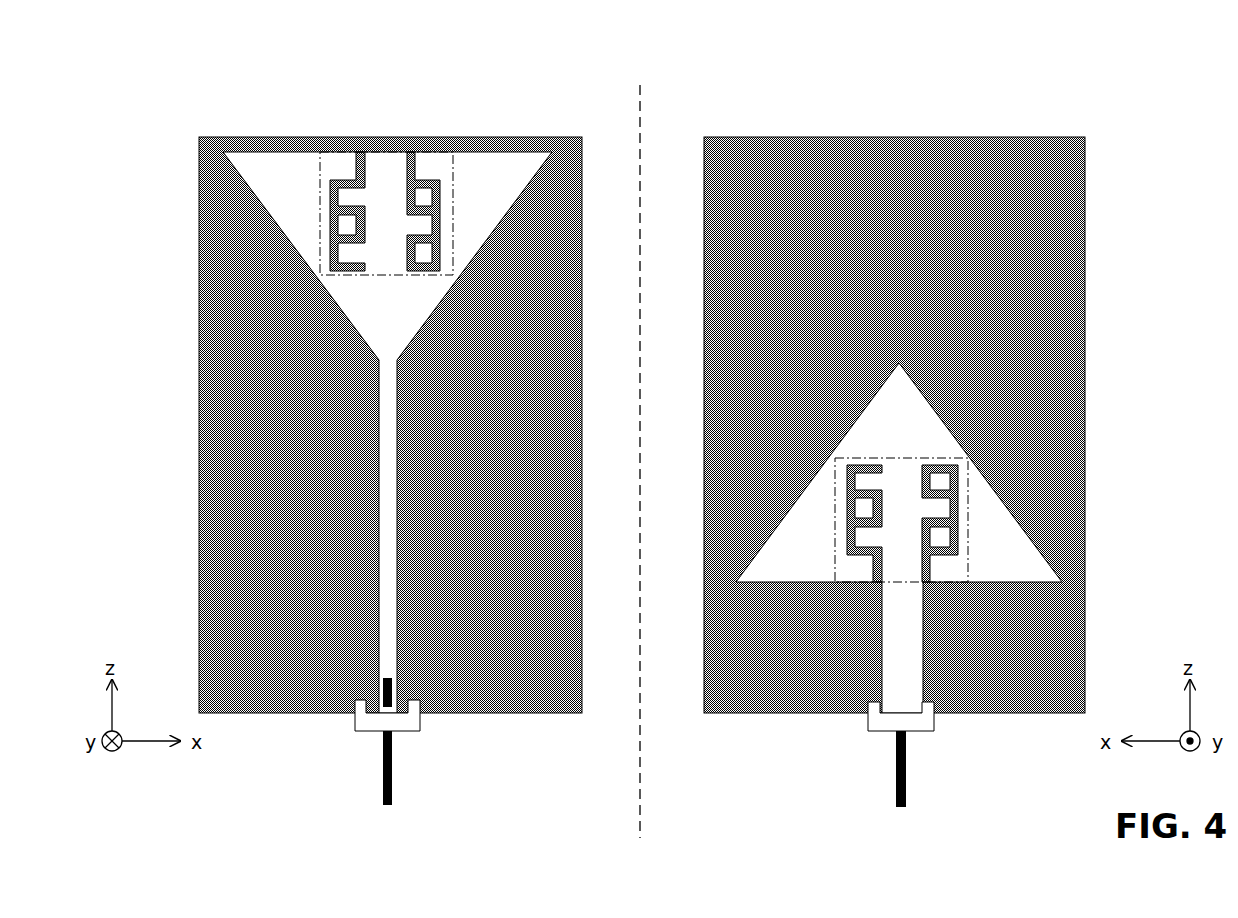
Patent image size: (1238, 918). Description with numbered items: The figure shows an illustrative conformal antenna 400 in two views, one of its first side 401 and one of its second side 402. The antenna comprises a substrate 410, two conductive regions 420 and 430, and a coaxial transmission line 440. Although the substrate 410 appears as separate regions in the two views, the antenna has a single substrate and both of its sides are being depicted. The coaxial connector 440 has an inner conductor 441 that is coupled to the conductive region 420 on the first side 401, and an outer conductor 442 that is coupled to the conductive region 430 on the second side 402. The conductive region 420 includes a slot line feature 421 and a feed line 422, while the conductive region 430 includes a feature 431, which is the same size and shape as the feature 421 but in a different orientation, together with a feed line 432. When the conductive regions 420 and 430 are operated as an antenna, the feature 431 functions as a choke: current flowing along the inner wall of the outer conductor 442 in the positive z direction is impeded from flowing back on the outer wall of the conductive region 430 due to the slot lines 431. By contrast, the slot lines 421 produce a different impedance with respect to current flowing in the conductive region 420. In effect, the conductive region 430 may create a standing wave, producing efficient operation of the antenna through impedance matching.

The conformal antenna 400 is at (629, 417).
The first side 401 is at (404, 70).
The second side 402 is at (914, 70).
The substrate 410 is at (235, 332).
The conductive region 420 is at (497, 183).
The slot line feature 421 is at (325, 160).
The feed line 422 is at (398, 480).
The conductive region 430 is at (1037, 570).
The feature 431 is at (968, 525).
The feed line 432 is at (917, 657).
The coaxial transmission line 440 is at (393, 800).
The inner conductor 441 is at (392, 686).
The outer conductor 442 is at (408, 725).